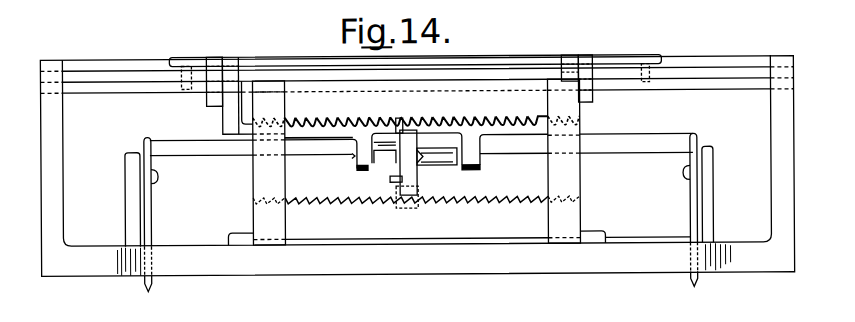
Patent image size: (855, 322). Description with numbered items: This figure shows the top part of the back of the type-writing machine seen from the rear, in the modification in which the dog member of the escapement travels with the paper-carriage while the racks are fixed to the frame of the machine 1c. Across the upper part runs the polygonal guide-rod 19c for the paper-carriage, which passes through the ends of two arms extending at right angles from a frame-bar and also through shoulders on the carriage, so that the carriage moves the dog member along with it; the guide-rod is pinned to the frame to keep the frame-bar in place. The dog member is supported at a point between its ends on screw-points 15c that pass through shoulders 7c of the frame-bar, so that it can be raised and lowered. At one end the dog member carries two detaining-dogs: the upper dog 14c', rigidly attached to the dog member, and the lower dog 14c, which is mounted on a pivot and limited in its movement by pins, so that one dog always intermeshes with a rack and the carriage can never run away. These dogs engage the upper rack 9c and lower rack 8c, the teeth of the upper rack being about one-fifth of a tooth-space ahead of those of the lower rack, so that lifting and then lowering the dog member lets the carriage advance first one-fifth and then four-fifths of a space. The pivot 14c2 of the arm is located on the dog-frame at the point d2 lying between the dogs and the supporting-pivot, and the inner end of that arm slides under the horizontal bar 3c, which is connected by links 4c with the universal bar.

The base frame 1c is at (410, 272).
The horizontal bar 3c is at (193, 155).
The links 4c is at (152, 223).
The shoulders 7c is at (356, 168).
The lower rack 8c is at (522, 196).
The upper rack 9c is at (317, 120).
The lower dog 14c is at (398, 185).
The upper dog 14c' is at (387, 114).
The pawl lever 14c2 is at (395, 152).
The pivot point d2 is at (402, 180).
The screw-points 15c is at (482, 160).
The polygonal guide-rod 19c is at (110, 75).